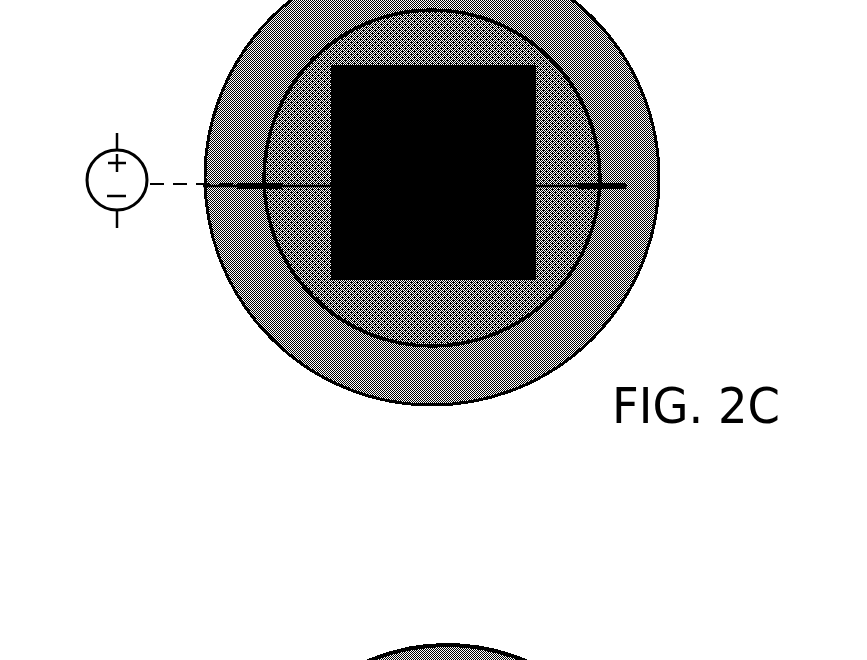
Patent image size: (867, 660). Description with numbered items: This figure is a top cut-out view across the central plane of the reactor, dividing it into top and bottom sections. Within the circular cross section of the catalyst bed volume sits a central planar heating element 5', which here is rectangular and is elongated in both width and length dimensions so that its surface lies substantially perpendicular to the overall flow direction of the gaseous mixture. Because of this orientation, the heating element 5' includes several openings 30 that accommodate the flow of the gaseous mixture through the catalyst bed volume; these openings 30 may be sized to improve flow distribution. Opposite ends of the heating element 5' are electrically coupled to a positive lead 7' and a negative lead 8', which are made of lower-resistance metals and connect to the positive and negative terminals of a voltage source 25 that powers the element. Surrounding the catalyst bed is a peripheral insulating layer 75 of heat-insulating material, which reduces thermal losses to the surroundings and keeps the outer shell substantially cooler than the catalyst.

The voltage source 25 is at (84, 181).
The positive lead 7' is at (267, 202).
The negative lead 8' is at (581, 202).
The openings 30 is at (502, 125).
The heating element 5' is at (433, 202).
The peripheral insulating layer 75 is at (447, 386).